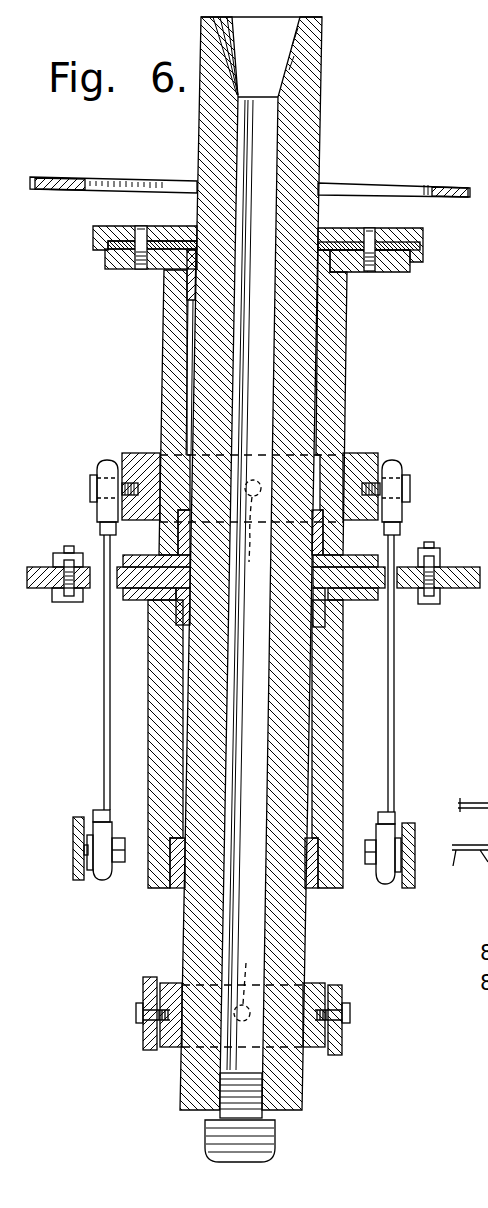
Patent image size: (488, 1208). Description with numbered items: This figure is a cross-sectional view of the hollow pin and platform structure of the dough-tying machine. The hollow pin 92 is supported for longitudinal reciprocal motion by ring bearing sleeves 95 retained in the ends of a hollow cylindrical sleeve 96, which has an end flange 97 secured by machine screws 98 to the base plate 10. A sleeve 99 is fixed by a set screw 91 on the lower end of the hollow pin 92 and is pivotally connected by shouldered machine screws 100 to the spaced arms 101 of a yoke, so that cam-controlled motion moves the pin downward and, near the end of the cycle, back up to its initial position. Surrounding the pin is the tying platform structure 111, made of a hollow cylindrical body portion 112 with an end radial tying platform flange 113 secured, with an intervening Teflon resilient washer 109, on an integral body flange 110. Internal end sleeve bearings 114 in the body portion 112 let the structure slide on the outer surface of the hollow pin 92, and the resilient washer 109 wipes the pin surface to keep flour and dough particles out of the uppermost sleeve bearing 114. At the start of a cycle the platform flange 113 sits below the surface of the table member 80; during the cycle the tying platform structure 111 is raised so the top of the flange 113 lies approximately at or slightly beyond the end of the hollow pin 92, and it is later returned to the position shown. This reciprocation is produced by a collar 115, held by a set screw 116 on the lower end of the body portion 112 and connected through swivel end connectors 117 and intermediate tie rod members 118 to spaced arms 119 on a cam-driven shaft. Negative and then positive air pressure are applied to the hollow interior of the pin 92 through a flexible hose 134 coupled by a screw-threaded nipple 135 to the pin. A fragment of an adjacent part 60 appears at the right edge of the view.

The hollow pin 92 is at (311, 77).
The table member 80 is at (450, 185).
The tying platform flange 113 is at (405, 229).
The Teflon resilient washer 109 is at (412, 247).
The integral body flange 110 is at (405, 271).
The internal end sleeve bearing 114 is at (188, 284).
The hollow cylindrical body portion 112 is at (336, 338).
The tying platform structure 111 is at (352, 378).
The swivel end connector 117 is at (104, 460).
The collar 115 is at (362, 462).
The set screw 116 is at (253, 585).
The base plate 10 is at (468, 569).
The machine screw 98 is at (62, 605).
The ring bearing sleeve 95 is at (180, 614).
The end flange 97 is at (356, 600).
The tie rod member 118 is at (102, 712).
The hollow cylindrical sleeve 96 is at (334, 740).
The spaced arm 119 is at (78, 816).
The sleeve 99 is at (312, 983).
The spaced arm of yoke structure 101 is at (155, 977).
The shouldered machine screw 100 is at (136, 1016).
The set screw 91 is at (248, 978).
The screw-threaded nipple 135 is at (262, 1087).
The flexible hose 134 is at (270, 1138).
The bracket 60 is at (469, 848).